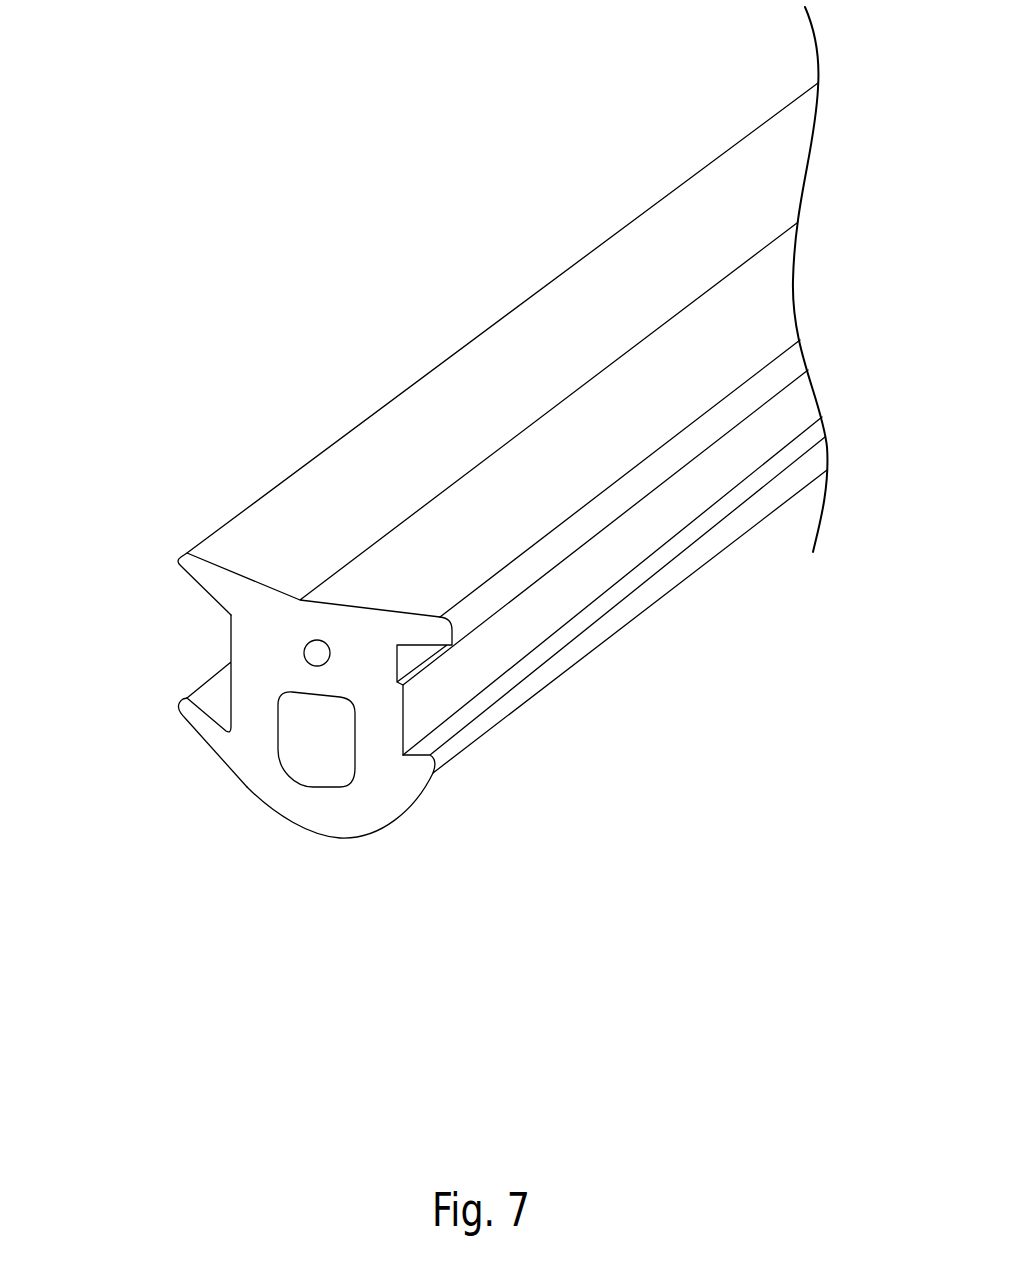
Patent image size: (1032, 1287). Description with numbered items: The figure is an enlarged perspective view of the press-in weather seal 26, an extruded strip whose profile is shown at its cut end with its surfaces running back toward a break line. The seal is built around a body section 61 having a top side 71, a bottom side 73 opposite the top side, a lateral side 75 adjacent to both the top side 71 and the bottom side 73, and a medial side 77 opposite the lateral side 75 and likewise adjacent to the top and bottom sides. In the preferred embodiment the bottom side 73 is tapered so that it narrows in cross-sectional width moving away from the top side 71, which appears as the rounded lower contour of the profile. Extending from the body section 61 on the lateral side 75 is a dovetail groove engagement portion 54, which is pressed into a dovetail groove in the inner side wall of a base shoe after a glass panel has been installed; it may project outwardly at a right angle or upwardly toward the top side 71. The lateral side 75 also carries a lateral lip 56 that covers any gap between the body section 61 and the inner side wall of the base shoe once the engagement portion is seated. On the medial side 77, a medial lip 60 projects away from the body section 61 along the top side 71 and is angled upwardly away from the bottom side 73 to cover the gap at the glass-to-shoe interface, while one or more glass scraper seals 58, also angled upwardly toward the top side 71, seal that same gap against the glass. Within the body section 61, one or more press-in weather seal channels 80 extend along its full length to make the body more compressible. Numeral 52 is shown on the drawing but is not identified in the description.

The press-in weather seal 26 is at (267, 408).
The first wall 52 is at (558, 600).
The dovetail groove engagement portion 54 is at (533, 703).
The lateral lip 56 is at (797, 360).
The glass scraper seal 58 is at (178, 700).
The medial lip 60 is at (233, 517).
The body section 61 is at (300, 810).
The top side 71 is at (403, 447).
The bottom side 73 is at (323, 860).
The lateral side 75 is at (640, 538).
The medial side 77 is at (175, 625).
The press-in weather seal channel 80 is at (297, 755).